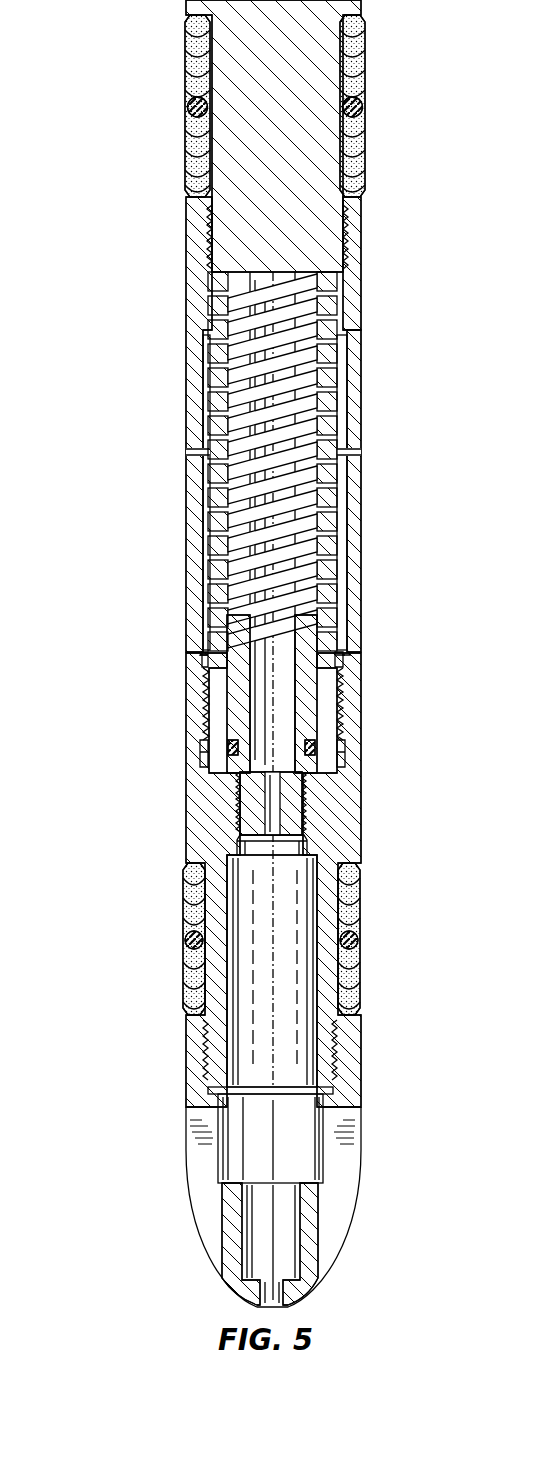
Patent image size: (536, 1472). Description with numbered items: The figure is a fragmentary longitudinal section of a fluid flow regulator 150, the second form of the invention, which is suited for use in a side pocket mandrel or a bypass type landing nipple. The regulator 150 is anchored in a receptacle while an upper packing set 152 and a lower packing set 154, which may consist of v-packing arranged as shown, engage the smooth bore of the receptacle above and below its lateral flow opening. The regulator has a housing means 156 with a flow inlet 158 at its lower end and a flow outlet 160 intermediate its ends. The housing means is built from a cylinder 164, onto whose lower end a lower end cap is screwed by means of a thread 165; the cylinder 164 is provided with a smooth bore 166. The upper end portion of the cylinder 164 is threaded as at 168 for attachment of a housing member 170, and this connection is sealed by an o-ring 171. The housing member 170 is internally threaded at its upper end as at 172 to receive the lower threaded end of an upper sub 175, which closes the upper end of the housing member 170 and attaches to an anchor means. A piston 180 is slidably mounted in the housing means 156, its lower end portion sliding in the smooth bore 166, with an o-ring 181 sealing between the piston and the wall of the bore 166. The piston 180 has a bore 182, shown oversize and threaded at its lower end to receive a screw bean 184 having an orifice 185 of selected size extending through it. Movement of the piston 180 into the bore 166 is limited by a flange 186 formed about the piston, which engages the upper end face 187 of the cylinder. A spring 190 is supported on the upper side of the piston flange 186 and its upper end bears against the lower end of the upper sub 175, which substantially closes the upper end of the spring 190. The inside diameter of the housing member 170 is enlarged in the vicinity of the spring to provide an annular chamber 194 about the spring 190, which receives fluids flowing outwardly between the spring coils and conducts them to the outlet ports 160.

The fluid flow regulator 150 is at (245, 653).
The upper packing set 152 is at (372, 115).
The lower packing set 154 is at (368, 943).
The housing means 156 is at (178, 405).
The flow inlet 158 is at (200, 1185).
The flow outlet 160 is at (197, 478).
The cylinder 164 is at (313, 880).
The thread 165 is at (333, 1053).
The smooth bore 166 is at (317, 993).
The threads 168 is at (343, 720).
The housing member 170 is at (365, 376).
The o-ring 171 is at (343, 765).
The internal thread 172 is at (340, 245).
The upper sub 175 is at (314, 136).
The piston 180 is at (216, 710).
The o-ring 181 is at (203, 746).
The bore 182 is at (290, 692).
The screw bean 184 is at (237, 807).
The orifice 185 is at (273, 833).
The flange 186 is at (358, 662).
The upper end face 187 is at (187, 653).
The spring 190 is at (344, 497).
The annular chamber 194 is at (341, 534).